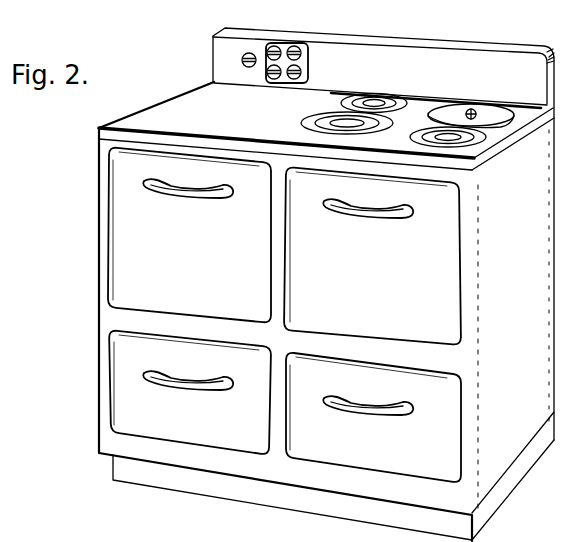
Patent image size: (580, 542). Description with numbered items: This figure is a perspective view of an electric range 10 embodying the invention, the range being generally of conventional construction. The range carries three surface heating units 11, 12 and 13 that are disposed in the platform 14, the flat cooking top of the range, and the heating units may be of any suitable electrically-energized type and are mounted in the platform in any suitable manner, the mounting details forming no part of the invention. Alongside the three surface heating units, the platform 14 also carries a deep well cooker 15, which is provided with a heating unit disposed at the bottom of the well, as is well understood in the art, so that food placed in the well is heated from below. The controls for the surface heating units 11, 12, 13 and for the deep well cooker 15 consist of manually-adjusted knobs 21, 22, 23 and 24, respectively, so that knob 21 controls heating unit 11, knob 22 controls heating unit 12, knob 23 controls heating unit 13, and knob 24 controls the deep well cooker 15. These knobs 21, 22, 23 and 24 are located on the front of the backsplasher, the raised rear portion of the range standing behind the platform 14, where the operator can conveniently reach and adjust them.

The electric range 10 is at (523, 267).
The surface heating unit 11 is at (310, 124).
The surface heating unit 12 is at (414, 137).
The surface heating unit 13 is at (350, 101).
The platform 14 is at (148, 115).
The deep well cooker 15 is at (488, 110).
The manually-adjusted knob 21 is at (272, 78).
The manually-adjusted knob 22 is at (307, 73).
The manually-adjusted knob 23 is at (273, 45).
The manually-adjusted knob 24 is at (297, 46).